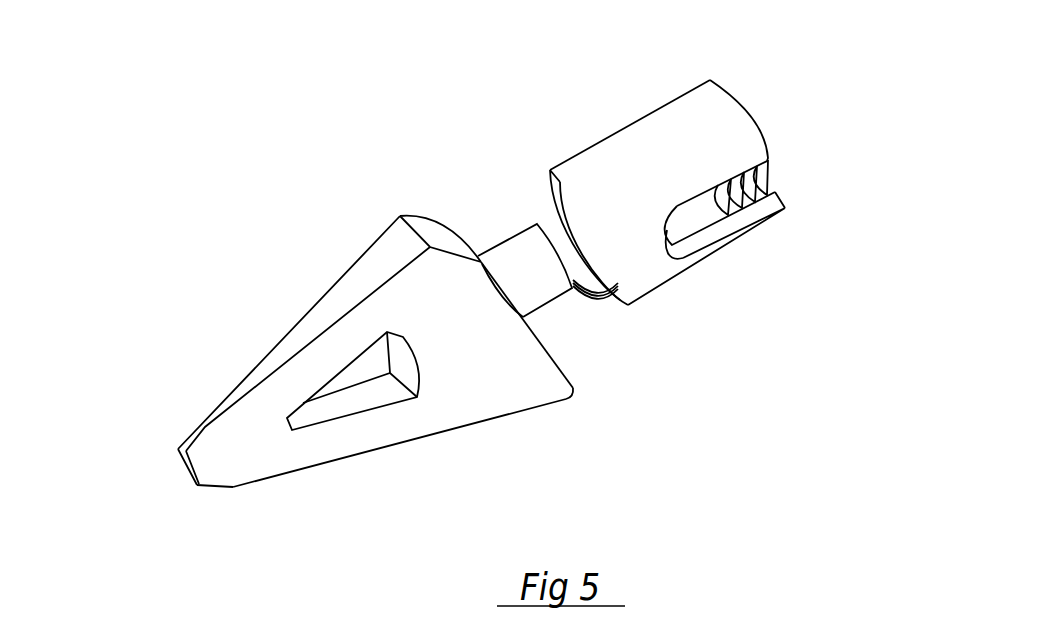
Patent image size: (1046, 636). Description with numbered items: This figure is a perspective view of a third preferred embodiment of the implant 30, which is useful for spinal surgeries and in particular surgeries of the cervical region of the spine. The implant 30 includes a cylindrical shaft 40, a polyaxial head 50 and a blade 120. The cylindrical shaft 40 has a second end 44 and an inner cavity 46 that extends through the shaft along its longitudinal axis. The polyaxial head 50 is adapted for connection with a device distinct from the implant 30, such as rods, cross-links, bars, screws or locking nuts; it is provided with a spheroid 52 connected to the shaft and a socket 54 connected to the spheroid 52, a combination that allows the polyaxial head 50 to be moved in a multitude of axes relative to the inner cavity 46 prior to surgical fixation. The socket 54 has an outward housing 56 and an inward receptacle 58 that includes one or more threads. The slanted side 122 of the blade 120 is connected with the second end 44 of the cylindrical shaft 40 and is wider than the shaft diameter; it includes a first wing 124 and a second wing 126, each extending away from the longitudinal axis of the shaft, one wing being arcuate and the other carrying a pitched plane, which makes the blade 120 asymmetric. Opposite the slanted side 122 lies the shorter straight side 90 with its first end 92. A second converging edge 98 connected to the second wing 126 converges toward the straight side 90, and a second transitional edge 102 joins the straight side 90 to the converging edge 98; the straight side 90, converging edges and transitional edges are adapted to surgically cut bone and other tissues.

The implant 30 is at (478, 287).
The cylindrical shaft 40 is at (519, 202).
The second end 44 is at (372, 435).
The inner cavity 46 is at (325, 290).
The polyaxial head 50 is at (698, 169).
The spheroid 52 is at (553, 171).
The socket 54 is at (724, 265).
The housing 56 is at (614, 85).
The inward receptacle 58 is at (787, 195).
The straight side 90 is at (123, 450).
The first end 92 is at (251, 333).
The second converging edge 98 is at (399, 485).
The second transitional edge 102 is at (150, 529).
The blade 120 is at (407, 332).
The slanted side 122 is at (624, 334).
The first wing 124 is at (378, 176).
The second wing 126 is at (665, 428).